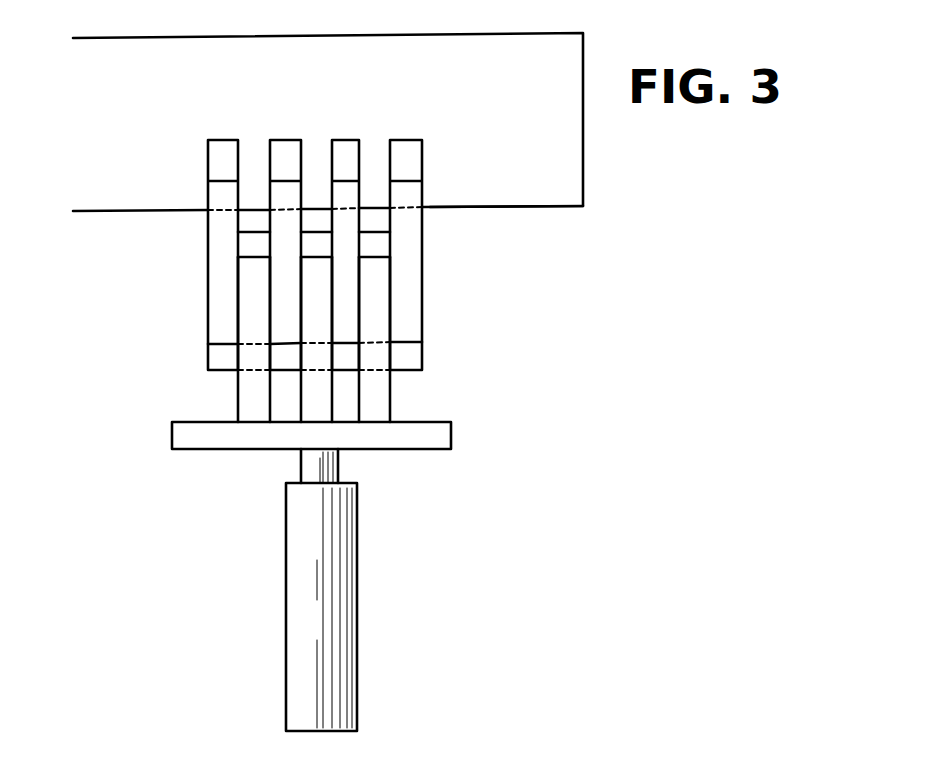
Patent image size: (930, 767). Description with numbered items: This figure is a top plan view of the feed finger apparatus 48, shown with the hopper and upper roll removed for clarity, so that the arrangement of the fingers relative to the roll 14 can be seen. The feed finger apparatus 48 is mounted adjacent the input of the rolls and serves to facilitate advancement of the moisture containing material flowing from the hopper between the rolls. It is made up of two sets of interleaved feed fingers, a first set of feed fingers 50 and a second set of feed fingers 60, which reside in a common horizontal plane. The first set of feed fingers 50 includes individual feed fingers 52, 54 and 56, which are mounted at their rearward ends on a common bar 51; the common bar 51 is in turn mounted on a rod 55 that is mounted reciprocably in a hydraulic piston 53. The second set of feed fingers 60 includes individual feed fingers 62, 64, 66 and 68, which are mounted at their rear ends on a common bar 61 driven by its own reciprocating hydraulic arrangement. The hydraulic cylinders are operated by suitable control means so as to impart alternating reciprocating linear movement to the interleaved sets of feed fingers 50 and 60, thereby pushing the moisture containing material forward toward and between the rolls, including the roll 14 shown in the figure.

The roll 14 is at (583, 63).
The feed finger apparatus 48 is at (301, 494).
The set of feed fingers 50 is at (365, 367).
The common bar 51 is at (451, 437).
The feed finger 52 is at (378, 230).
The hydraulic piston 53 is at (358, 625).
The feed finger 54 is at (319, 231).
The rod 55 is at (340, 464).
The feed finger 56 is at (250, 252).
The set of feed fingers 60 is at (345, 206).
The common bar 61 is at (424, 354).
The feed finger 62 is at (425, 167).
The feed finger 64 is at (363, 148).
The feed finger 66 is at (302, 138).
The feed finger 68 is at (242, 142).